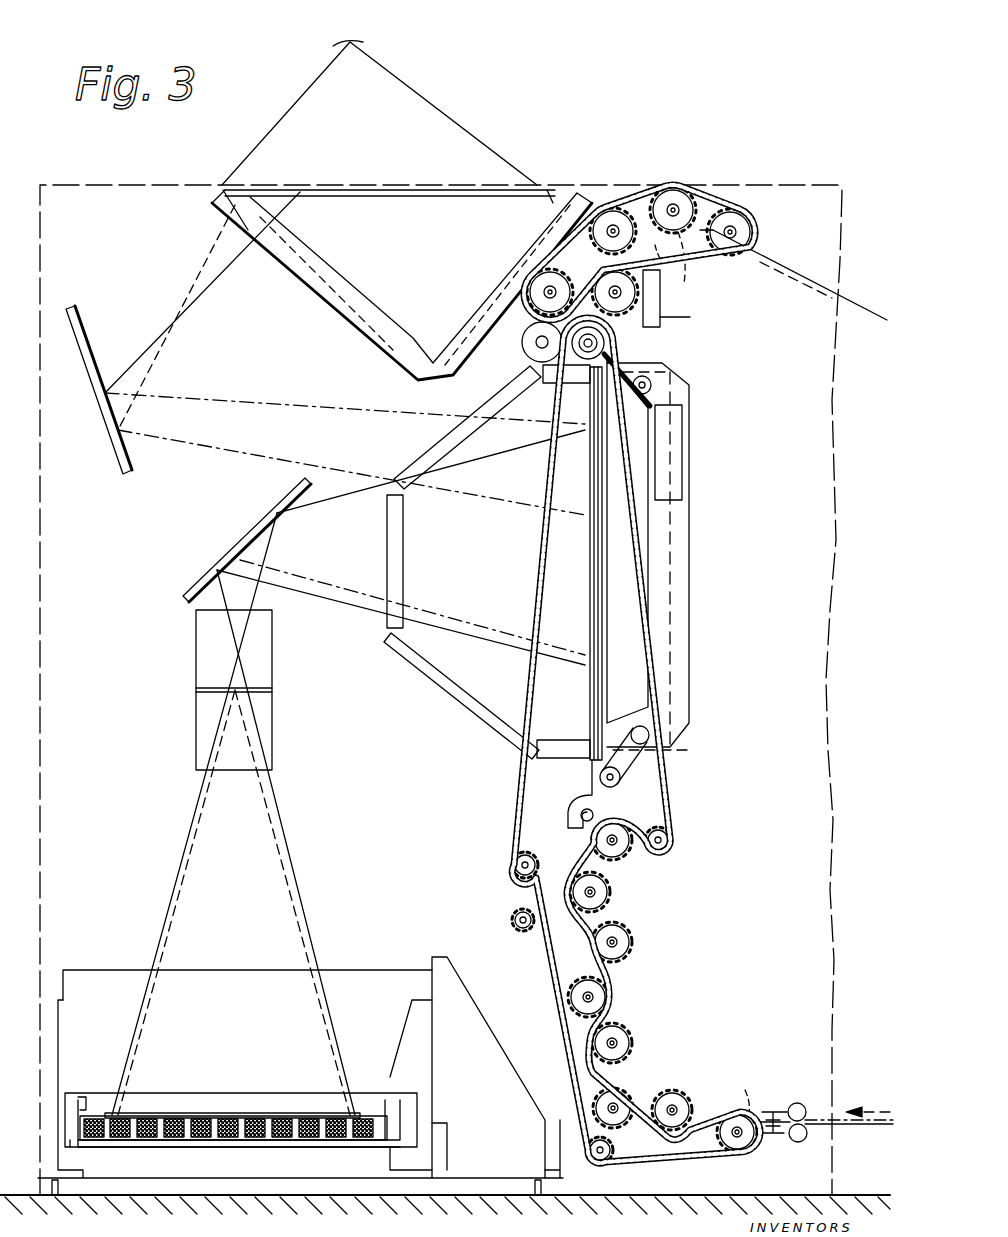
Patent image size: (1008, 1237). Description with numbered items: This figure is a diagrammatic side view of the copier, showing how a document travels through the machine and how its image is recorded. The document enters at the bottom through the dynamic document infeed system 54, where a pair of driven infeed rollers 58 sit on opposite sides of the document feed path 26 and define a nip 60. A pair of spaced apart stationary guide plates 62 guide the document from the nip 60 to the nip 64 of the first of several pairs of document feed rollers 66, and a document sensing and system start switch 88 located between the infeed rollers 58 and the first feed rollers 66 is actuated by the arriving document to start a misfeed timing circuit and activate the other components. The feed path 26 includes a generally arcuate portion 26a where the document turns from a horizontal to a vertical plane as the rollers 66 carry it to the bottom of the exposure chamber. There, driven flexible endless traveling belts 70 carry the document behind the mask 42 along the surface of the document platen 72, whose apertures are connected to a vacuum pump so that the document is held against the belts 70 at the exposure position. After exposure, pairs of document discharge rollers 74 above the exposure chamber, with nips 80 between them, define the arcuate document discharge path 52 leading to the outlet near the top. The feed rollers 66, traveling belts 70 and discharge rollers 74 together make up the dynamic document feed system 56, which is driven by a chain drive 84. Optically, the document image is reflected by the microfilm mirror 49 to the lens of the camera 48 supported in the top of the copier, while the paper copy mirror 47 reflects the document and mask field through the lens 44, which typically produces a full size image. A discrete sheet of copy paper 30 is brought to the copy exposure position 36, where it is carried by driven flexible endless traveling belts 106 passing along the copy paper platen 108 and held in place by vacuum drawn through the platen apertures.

The camera 48 is at (372, 125).
The chain drive 84 is at (603, 210).
The document discharge path 52 is at (647, 190).
The document discharge rollers 74 is at (675, 208).
The nip 80 is at (733, 247).
The microfilm mirror 49 is at (122, 470).
The paper copy mirror 47 is at (188, 588).
The lens 44 is at (196, 695).
The mask 42 is at (548, 458).
The document platen 72 is at (630, 645).
The driven flexible endless traveling belts 70 is at (633, 752).
The document feed rollers 66 is at (598, 838).
The document feed path 26 is at (627, 930).
The arcuate portion 26a is at (628, 1093).
The dynamic document feed system 56 is at (650, 1028).
The stationary guide plates 62 is at (748, 1140).
The nip 64 is at (748, 1100).
The document sensing and system start switch 88 is at (772, 1108).
The dynamic document infeed system 54 is at (813, 1076).
The driven infeed rollers 58 is at (808, 1104).
The nip 60 is at (808, 1122).
The sheet of copy paper 30 is at (320, 1112).
The copy exposure position 36 is at (268, 1105).
The copy paper platen 108 is at (82, 1098).
The driven flexible endless traveling belts 106 is at (192, 1140).